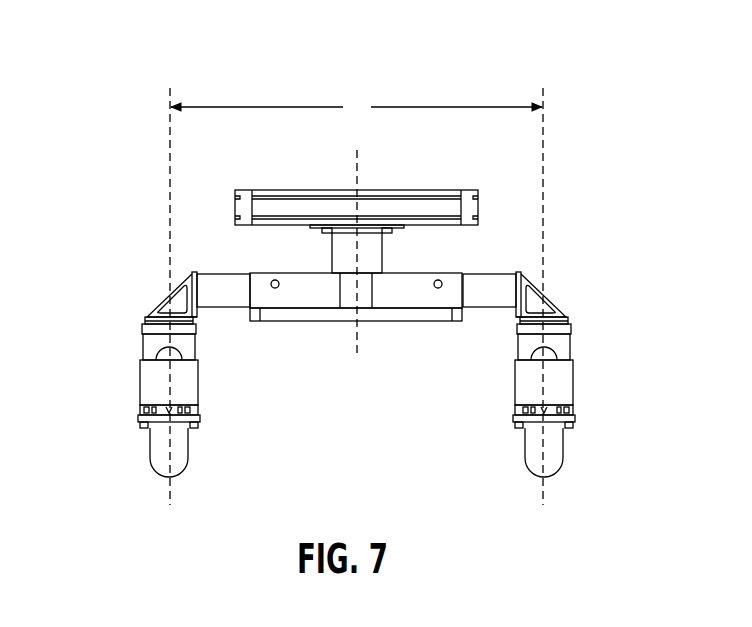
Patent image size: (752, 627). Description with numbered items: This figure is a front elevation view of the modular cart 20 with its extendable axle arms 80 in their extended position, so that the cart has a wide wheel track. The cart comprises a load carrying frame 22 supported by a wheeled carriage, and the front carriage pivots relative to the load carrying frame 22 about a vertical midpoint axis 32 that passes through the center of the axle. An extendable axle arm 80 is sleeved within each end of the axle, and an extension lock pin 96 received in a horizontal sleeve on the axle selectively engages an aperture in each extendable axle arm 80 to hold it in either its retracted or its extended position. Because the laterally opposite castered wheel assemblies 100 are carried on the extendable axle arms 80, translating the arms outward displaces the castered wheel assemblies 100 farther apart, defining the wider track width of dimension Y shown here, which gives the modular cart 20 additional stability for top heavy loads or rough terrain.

The modular cart 20 is at (605, 106).
The load carrying frame 22 is at (356, 206).
The vertical midpoint axis 32 is at (327, 277).
The extendable axle arm 80 is at (228, 320).
The extension lock pin 96 is at (360, 261).
The castered wheel assembly 100 is at (128, 376).